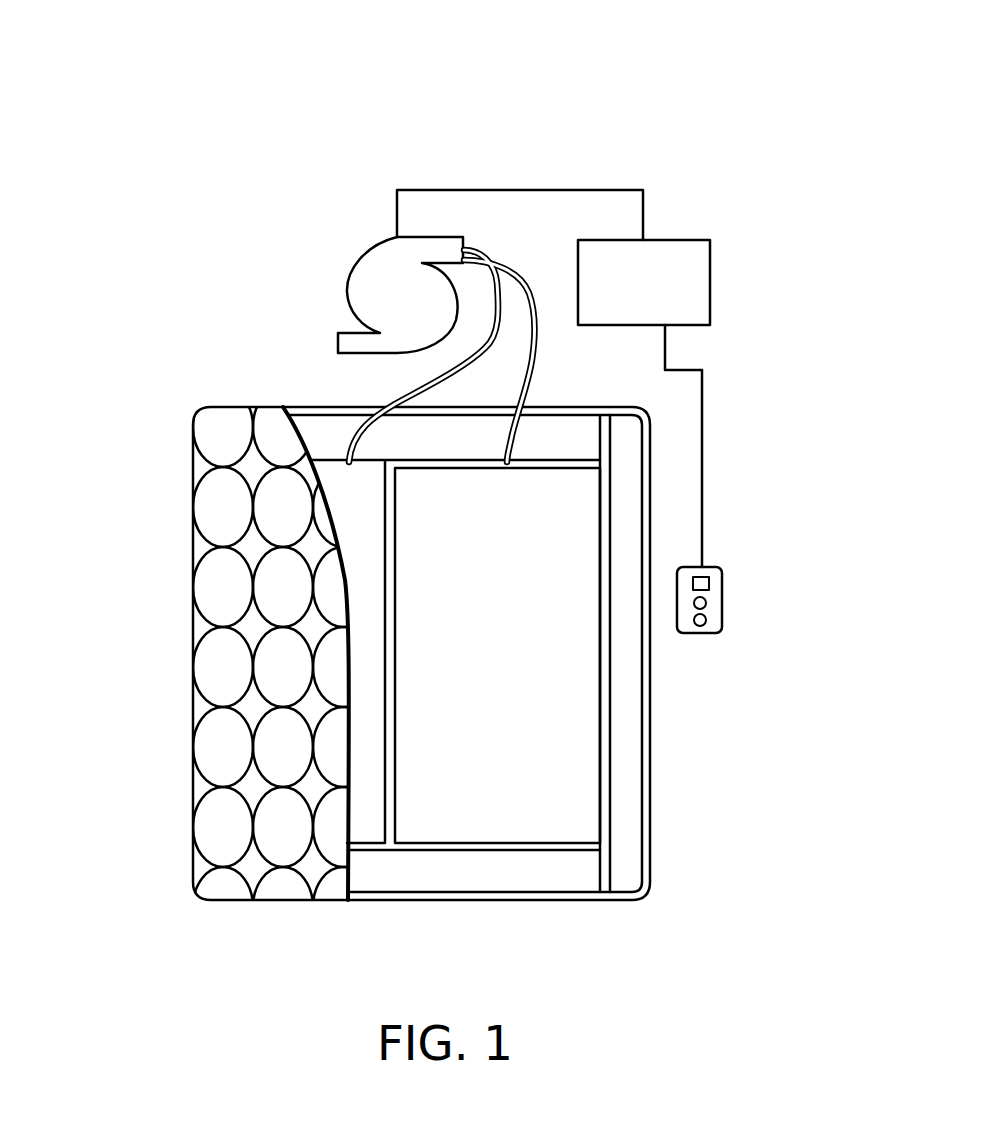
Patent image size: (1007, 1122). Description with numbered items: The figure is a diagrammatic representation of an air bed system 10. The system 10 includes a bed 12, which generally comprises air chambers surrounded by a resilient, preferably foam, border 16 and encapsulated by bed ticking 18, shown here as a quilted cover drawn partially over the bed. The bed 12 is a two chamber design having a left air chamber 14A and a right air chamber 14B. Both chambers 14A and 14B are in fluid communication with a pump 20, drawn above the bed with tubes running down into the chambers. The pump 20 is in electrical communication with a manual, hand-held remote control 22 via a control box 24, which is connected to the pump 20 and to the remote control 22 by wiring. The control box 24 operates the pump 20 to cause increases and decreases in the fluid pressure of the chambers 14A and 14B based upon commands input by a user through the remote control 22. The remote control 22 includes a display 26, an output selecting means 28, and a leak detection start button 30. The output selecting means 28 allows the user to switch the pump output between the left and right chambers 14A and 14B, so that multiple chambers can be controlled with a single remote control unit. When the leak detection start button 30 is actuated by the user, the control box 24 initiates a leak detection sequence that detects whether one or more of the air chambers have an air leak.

The air bed system 10 is at (188, 92).
The bed 12 is at (147, 733).
The left air chamber 14A is at (338, 507).
The right air chamber 14B is at (524, 719).
The border 16 is at (622, 703).
The bed ticking 18 is at (220, 665).
The pump 20 is at (360, 274).
The remote control 22 is at (722, 620).
The control box 24 is at (673, 240).
The display 26 is at (707, 578).
The output selecting means 28 is at (700, 603).
The leak detection start button 30 is at (700, 626).